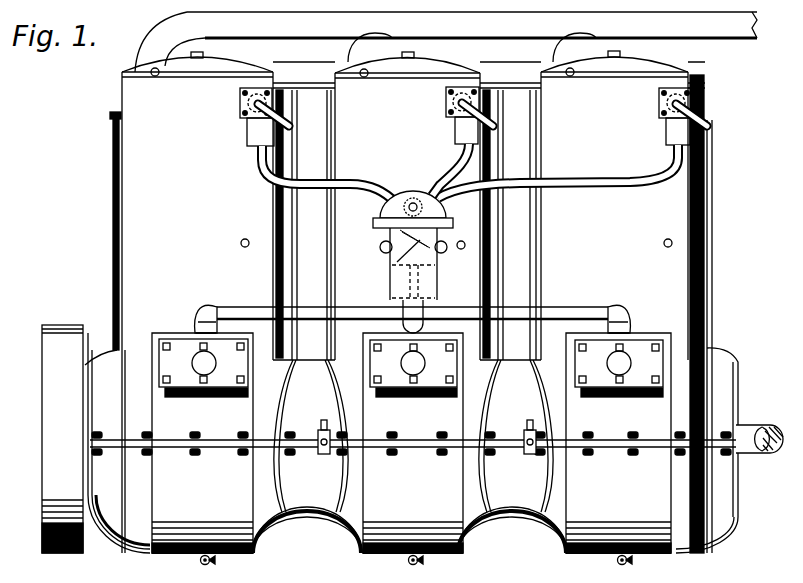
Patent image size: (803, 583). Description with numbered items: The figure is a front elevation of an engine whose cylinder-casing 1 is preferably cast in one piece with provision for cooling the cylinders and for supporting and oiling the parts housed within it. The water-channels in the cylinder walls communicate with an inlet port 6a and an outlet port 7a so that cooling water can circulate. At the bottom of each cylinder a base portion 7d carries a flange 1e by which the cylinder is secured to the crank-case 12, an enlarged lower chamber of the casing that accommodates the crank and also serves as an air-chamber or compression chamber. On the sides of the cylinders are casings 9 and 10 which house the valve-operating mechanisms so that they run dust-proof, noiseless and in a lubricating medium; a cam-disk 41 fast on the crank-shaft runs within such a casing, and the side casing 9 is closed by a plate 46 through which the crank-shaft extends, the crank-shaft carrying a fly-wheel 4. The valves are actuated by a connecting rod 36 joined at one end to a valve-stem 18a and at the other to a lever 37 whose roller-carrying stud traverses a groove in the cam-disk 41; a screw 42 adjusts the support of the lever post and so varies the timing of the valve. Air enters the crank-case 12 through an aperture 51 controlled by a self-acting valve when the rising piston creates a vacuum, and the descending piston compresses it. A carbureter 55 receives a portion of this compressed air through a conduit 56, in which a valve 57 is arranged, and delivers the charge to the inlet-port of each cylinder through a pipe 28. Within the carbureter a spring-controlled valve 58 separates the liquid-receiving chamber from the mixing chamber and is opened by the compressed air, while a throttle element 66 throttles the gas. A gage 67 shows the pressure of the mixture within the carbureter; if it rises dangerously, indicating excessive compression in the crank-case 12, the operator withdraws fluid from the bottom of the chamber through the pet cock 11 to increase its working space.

The cylinder-casing 1 is at (197, 302).
The flange 1e is at (618, 449).
The fly-wheel 4 is at (52, 553).
The inlet port 6a is at (241, 243).
The outlet port 7a is at (573, 75).
The base portion 7d is at (378, 514).
The side casing 9 is at (107, 524).
The side casing 10 is at (318, 522).
The pet cock 11 is at (417, 570).
The crank-case 12 is at (202, 443).
The valve-stem 18a is at (714, 95).
The pipe or conduit 28 is at (582, 175).
The connecting rod 36 is at (113, 238).
The lever 37 is at (240, 106).
The cam-disk 41 is at (325, 456).
The screw 42 is at (319, 452).
The plate 46 is at (741, 418).
The aperture 51 is at (404, 363).
The carbureter 55 is at (393, 264).
The conduit 56 is at (572, 310).
The valve 57 is at (195, 322).
The spring-controlled valve 58 is at (438, 272).
The throttle element 66 is at (398, 263).
The gage 67 is at (410, 191).